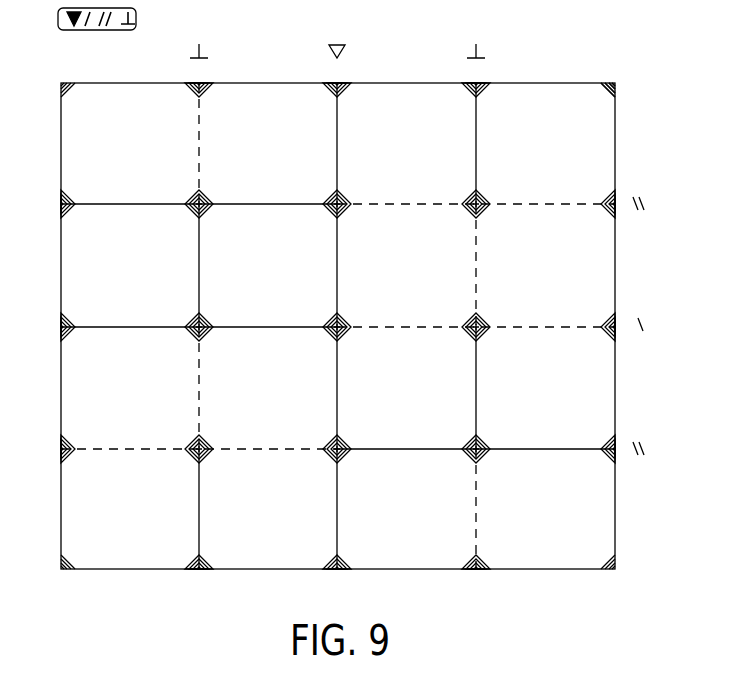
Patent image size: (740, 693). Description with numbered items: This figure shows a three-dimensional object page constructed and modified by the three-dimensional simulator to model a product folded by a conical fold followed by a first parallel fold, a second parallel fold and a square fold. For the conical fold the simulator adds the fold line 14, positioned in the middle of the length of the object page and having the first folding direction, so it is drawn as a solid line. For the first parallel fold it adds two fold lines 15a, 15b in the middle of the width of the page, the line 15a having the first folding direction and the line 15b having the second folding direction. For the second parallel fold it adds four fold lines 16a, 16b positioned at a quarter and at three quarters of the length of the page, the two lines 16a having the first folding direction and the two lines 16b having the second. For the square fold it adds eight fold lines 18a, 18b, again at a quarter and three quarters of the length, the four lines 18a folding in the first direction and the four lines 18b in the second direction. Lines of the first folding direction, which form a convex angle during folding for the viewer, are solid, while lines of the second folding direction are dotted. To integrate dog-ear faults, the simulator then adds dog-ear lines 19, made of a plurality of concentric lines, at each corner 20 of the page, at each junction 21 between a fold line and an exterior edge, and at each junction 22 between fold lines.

The fold line 14 is at (342, 484).
The fold line 15a is at (240, 325).
The fold line 15b is at (453, 325).
The fold line 16a is at (156, 198).
The fold line 16b is at (442, 196).
The fold line 18a is at (479, 121).
The fold line 18b is at (196, 133).
The dog-ear line 19 is at (607, 96).
The corner 20 is at (655, 138).
The junction 21 is at (344, 90).
The junction 22 is at (330, 196).